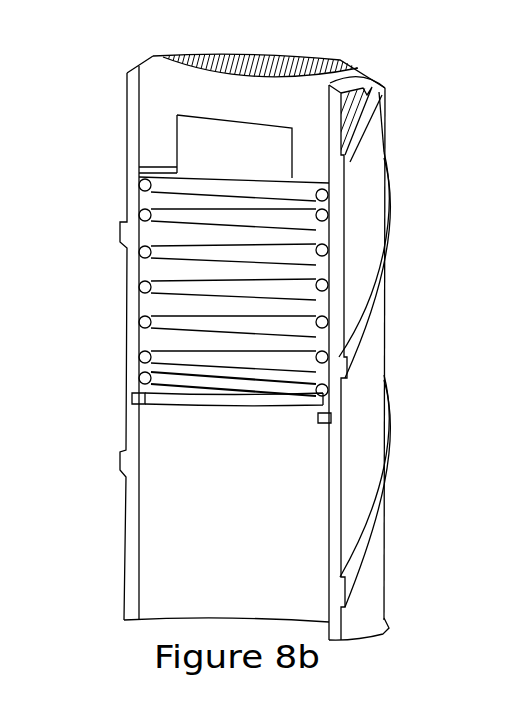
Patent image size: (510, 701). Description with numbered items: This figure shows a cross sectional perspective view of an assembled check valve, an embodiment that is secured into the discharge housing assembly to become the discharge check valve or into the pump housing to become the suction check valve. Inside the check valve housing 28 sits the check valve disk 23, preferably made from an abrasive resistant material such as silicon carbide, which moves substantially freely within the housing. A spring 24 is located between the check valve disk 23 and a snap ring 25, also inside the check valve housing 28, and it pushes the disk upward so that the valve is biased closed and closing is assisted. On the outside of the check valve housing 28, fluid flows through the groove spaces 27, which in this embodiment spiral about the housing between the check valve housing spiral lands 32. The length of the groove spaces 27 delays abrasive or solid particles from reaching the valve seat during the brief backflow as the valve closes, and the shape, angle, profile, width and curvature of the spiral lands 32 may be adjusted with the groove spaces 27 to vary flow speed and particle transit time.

The check valve disk 23 is at (293, 52).
The spring 24 is at (141, 208).
The snap ring 25 is at (137, 390).
The groove spaces 27 is at (371, 379).
The check valve housing 28 is at (334, 501).
The check valve housing spiral lands 32 is at (394, 212).